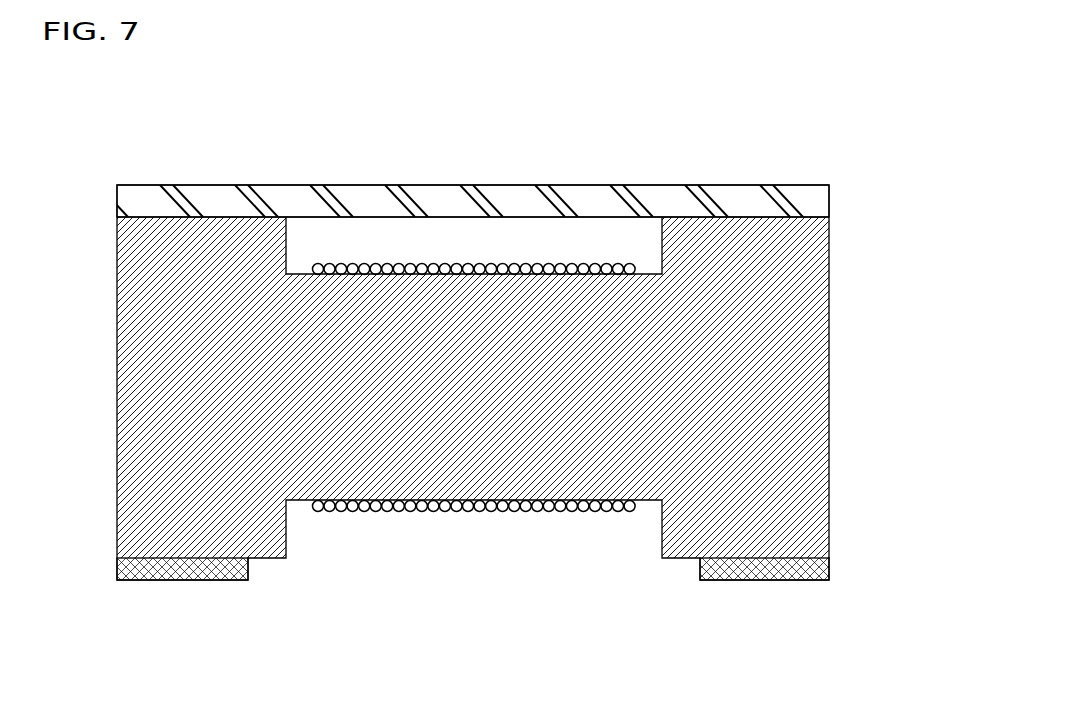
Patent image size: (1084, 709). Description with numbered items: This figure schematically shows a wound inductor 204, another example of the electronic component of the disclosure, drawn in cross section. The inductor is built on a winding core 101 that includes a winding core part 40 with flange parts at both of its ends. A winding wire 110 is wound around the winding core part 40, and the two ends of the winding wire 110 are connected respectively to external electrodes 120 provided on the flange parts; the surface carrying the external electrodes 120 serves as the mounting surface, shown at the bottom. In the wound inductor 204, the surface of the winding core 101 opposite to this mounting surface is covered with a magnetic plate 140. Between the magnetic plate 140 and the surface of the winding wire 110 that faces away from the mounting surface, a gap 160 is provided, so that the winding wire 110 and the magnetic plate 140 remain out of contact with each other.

The wound inductor 204 is at (137, 167).
The winding core 101 is at (803, 353).
The magnetic plate 140 is at (583, 203).
The gap 160 is at (372, 243).
The winding core part 40 is at (495, 455).
The winding wire 110 is at (418, 512).
The external electrode 120 is at (172, 573).